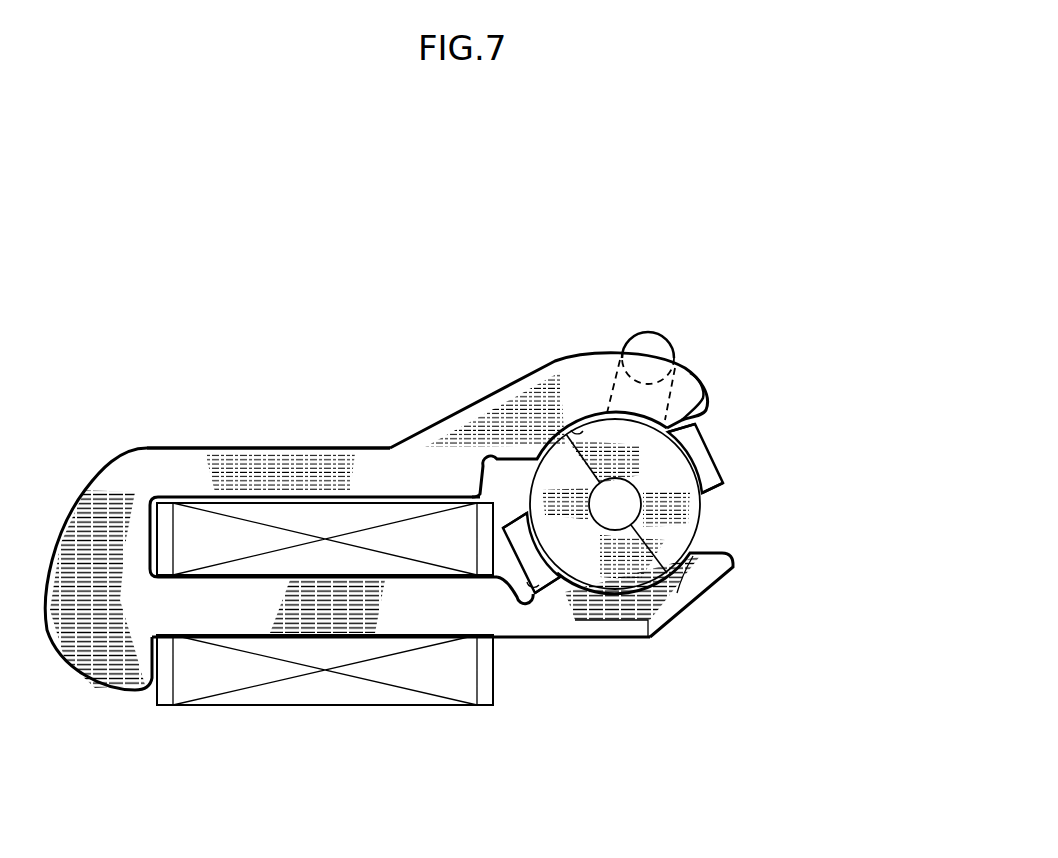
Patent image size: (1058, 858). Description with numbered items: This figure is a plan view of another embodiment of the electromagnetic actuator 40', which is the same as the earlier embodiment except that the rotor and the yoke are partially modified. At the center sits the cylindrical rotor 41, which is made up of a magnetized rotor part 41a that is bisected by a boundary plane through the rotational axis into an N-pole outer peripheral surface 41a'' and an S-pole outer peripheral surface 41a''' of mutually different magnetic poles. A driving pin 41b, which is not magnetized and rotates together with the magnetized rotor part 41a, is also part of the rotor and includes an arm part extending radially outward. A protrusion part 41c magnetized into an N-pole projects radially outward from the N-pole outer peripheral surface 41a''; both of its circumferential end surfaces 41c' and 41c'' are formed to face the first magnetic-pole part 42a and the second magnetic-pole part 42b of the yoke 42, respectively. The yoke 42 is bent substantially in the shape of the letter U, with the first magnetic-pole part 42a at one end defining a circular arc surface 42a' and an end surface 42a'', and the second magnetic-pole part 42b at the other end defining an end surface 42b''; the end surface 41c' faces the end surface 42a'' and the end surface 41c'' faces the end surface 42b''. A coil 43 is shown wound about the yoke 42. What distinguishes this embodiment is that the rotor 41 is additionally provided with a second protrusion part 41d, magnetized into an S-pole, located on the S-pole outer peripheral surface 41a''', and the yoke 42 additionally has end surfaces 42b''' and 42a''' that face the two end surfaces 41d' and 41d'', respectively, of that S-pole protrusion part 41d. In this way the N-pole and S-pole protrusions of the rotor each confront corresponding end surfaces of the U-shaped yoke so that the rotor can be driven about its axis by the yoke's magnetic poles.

The electromagnetic actuator 40' is at (268, 296).
The rotor 41 is at (705, 510).
The magnetized rotor part 41a is at (657, 507).
The N-pole outer peripheral surface 41a'' is at (775, 570).
The S-pole outer peripheral surface 41a''' is at (497, 441).
The driving pin 41b is at (655, 342).
The protrusion part 41c is at (800, 412).
The end surface 41c' is at (756, 381).
The end surface 41c'' is at (817, 465).
The protrusion part 41d is at (478, 599).
The end surface 41d' is at (582, 647).
The end surface 41d'' is at (427, 450).
The yoke 42 is at (197, 452).
The first magnetic-pole part 42a is at (567, 349).
The circular arc surface 42a' is at (559, 356).
The end surface 42a'' is at (745, 323).
The end surface 42a''' is at (413, 415).
The second magnetic-pole part 42b is at (690, 654).
The end surface 42b'' is at (780, 613).
The end surface 42b''' is at (538, 672).
The coil 43 is at (243, 697).